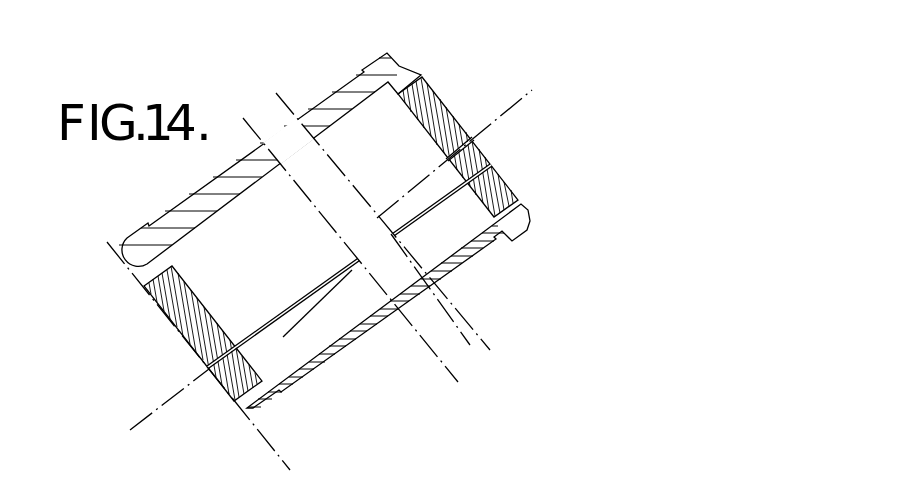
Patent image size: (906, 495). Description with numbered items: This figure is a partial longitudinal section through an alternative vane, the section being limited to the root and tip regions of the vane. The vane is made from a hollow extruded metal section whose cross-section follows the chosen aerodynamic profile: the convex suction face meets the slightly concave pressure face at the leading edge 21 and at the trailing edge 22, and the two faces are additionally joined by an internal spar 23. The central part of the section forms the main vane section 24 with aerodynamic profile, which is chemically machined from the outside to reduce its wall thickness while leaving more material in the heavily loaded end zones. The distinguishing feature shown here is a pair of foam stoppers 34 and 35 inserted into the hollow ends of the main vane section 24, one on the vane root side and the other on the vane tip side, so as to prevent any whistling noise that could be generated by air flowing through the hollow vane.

The leading edge 21 is at (477, 263).
The trailing edge 22 is at (255, 160).
The spar 23 is at (391, 233).
The main vane section 24 is at (337, 325).
The foam stopper 34 is at (450, 113).
The foam stopper 35 is at (192, 350).